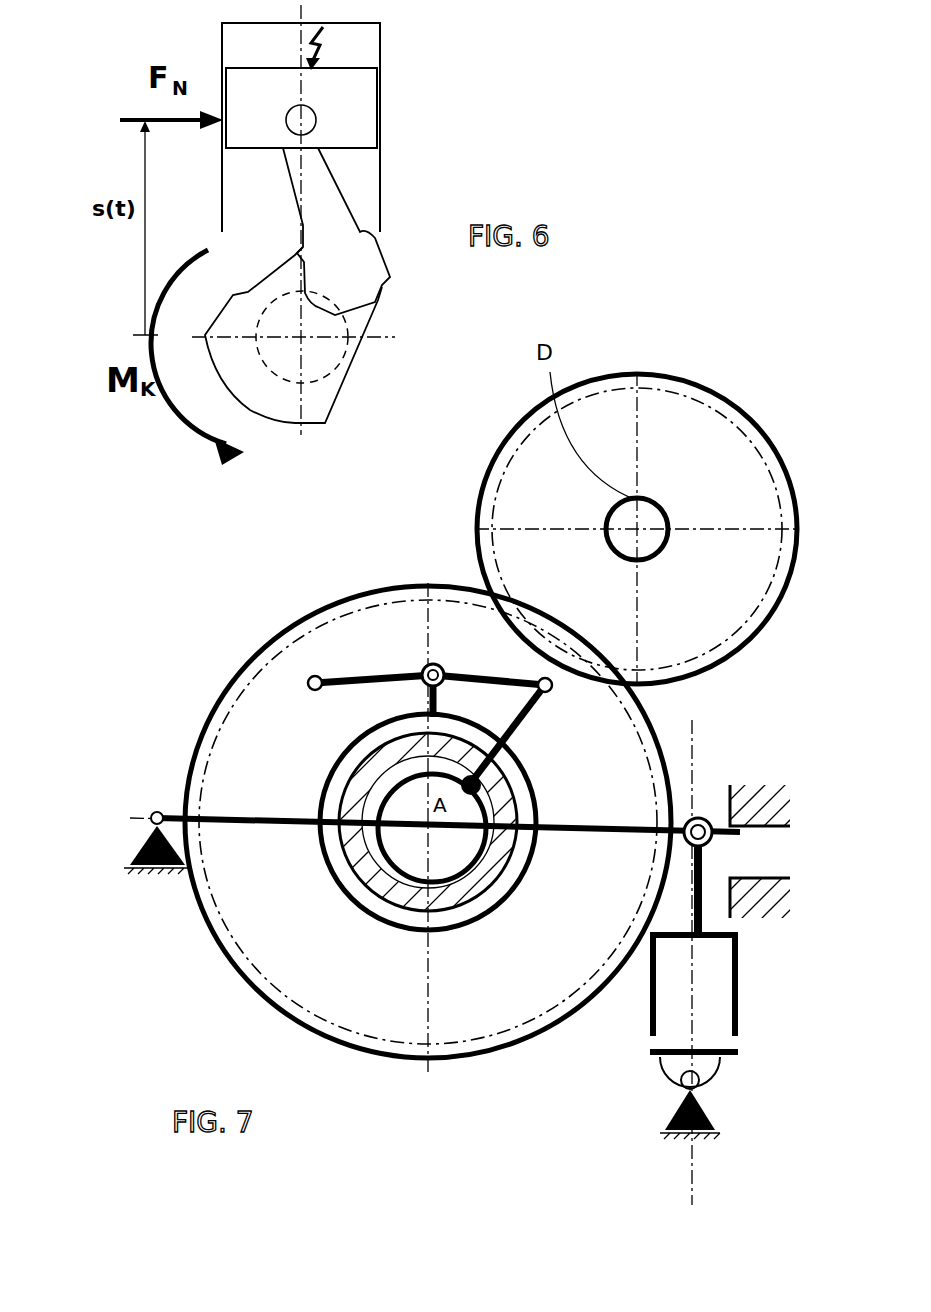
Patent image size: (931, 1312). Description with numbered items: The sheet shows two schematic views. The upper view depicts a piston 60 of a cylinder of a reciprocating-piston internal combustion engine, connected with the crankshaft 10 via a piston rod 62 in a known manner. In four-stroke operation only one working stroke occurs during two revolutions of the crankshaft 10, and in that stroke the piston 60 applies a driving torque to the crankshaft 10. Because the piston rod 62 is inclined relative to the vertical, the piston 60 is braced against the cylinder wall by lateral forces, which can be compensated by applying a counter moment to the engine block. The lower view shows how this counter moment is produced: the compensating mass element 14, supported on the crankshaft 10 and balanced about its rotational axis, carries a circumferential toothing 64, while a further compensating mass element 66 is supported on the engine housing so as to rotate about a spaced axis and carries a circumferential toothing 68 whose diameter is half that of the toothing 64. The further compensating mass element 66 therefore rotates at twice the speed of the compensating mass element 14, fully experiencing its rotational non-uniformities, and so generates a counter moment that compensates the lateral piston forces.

In FIG. 6, the piston 60 is at (360, 115).
In FIG. 6, the piston rod 62 is at (335, 213).
In FIG. 6, the crankshaft 10 is at (322, 350).
In FIG. 7, the further compensating mass element 66 is at (722, 462).
In FIG. 7, the circumferential toothing 68 is at (758, 630).
In FIG. 7, the circumferential toothing 64 is at (345, 1030).
In FIG. 7, the compensating mass element 14 is at (458, 1012).